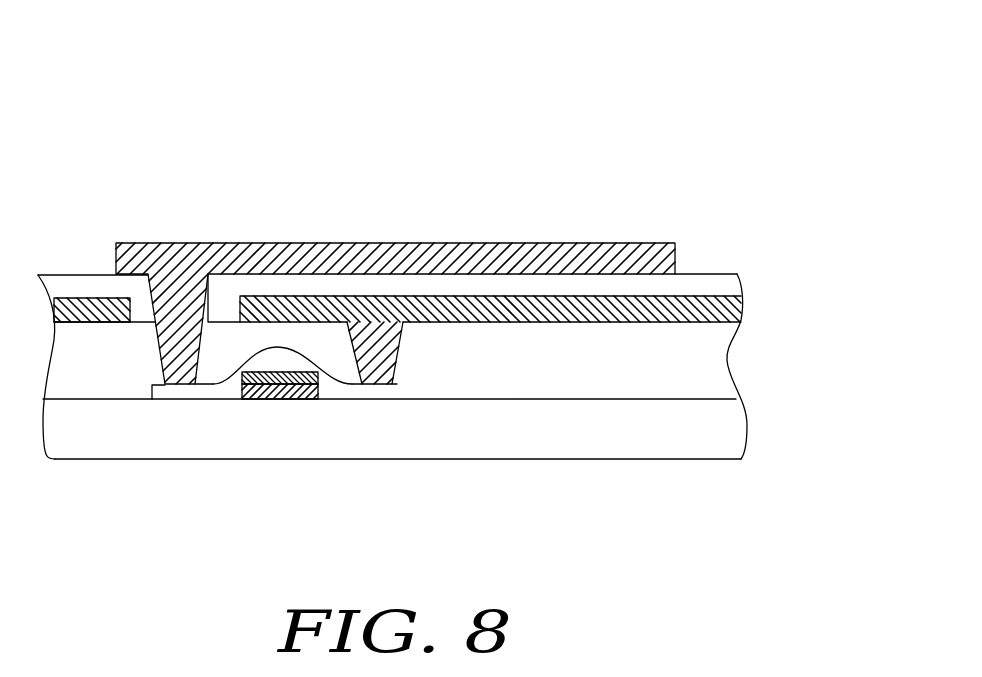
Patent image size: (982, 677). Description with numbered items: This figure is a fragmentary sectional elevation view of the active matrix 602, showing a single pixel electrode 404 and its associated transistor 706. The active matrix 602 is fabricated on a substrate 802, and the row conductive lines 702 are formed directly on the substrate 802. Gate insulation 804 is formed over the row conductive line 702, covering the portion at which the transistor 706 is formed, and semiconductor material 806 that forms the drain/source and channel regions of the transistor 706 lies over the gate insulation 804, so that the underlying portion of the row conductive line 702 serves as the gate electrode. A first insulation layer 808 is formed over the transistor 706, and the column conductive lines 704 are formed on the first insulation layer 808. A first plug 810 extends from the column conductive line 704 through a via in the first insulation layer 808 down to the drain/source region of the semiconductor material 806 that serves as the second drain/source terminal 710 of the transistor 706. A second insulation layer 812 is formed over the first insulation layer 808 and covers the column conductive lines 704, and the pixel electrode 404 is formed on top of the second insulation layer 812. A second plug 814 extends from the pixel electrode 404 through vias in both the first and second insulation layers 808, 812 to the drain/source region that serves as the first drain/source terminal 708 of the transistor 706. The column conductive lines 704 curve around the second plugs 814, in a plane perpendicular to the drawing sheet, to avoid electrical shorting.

The active matrix 602 is at (437, 165).
The pixel electrode 404 is at (522, 242).
The second insulation layer 812 is at (731, 279).
The second plug 814 is at (158, 347).
The column conductive line 704 is at (628, 321).
The first insulation layer 808 is at (690, 355).
The first plug 810 is at (399, 347).
The semiconductor material 806 is at (307, 360).
The first drain/source terminal 708 is at (152, 386).
The second drain/source terminal 710 is at (397, 382).
The row conductive line 702 is at (248, 393).
The gate insulation 804 is at (320, 380).
The transistor 706 is at (300, 438).
The substrate 802 is at (722, 447).